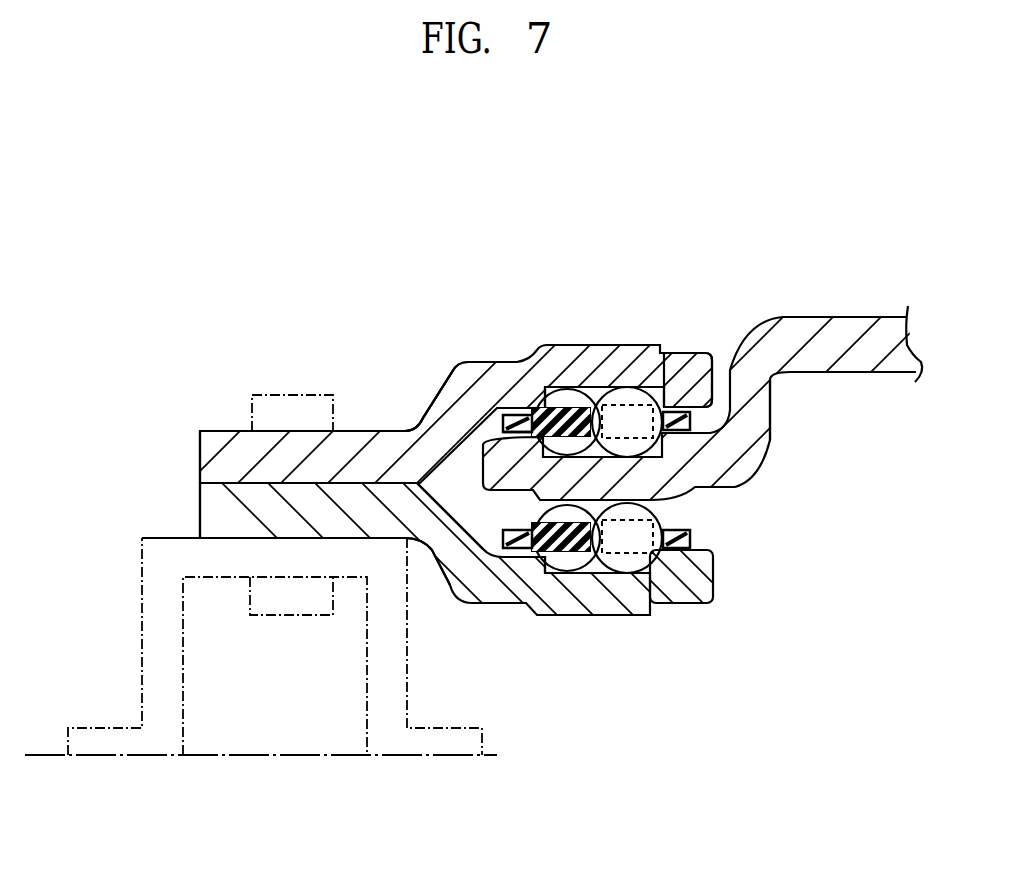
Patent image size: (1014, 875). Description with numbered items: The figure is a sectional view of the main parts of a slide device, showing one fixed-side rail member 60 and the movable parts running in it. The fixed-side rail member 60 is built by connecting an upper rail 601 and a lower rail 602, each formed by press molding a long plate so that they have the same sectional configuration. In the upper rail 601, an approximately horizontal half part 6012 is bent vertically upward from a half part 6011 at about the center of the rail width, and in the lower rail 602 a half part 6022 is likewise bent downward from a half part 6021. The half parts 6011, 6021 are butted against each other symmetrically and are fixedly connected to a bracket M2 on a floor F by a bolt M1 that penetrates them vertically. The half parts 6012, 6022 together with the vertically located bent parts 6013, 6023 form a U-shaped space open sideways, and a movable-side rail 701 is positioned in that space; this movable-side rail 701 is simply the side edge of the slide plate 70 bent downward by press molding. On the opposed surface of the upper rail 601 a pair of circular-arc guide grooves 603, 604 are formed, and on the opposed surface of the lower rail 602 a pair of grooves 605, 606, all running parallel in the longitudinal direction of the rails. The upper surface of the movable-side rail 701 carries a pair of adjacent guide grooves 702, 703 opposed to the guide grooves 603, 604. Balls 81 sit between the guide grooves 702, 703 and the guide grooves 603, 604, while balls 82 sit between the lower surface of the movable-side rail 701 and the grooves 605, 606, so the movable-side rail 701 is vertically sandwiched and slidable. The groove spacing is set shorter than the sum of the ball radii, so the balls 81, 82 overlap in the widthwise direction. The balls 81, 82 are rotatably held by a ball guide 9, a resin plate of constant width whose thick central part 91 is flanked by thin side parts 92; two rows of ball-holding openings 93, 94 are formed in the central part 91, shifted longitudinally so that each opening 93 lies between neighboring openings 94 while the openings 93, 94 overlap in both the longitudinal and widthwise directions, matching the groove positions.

The fixed-side rail member 60 is at (409, 293).
The upper rail 601 is at (477, 362).
The half part 6011 is at (363, 428).
The half part 6012 is at (597, 345).
The bent part 6013 is at (447, 387).
The guide groove 603 is at (548, 346).
The guide groove 604 is at (662, 352).
The bolt M1 is at (278, 395).
The lower rail 602 is at (497, 615).
The half part 6021 is at (310, 540).
The half part 6022 is at (613, 615).
The bent part 6023 is at (410, 607).
The groove 605 is at (542, 615).
The groove 606 is at (650, 603).
The guide groove 702 is at (444, 552).
The slide plate 70 is at (851, 318).
The movable-side rail 701 is at (772, 423).
The guide groove 703 is at (658, 500).
The ball-holding opening 93 is at (741, 485).
The ball 81 is at (575, 388).
The ball 82 is at (575, 595).
The side part 92 is at (453, 387).
The ball guide 9 is at (660, 400).
The central part 91 is at (522, 368).
The ball-holding opening 94 is at (513, 433).
The bracket M2 is at (140, 613).
The floor F is at (236, 760).